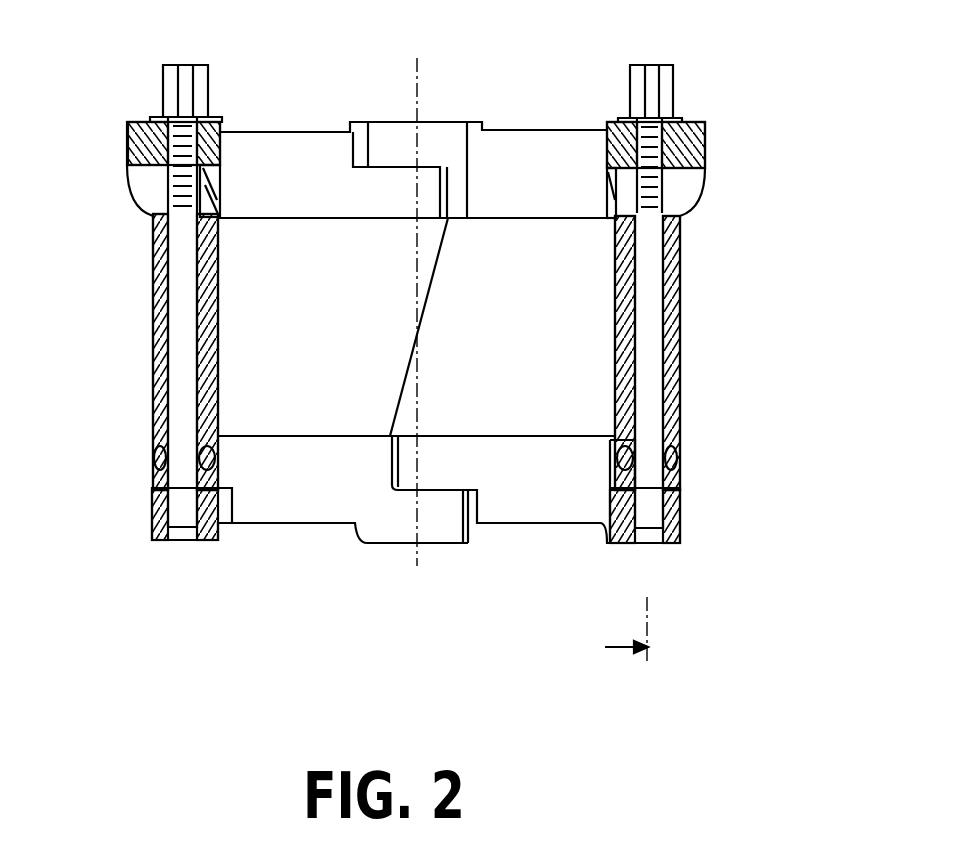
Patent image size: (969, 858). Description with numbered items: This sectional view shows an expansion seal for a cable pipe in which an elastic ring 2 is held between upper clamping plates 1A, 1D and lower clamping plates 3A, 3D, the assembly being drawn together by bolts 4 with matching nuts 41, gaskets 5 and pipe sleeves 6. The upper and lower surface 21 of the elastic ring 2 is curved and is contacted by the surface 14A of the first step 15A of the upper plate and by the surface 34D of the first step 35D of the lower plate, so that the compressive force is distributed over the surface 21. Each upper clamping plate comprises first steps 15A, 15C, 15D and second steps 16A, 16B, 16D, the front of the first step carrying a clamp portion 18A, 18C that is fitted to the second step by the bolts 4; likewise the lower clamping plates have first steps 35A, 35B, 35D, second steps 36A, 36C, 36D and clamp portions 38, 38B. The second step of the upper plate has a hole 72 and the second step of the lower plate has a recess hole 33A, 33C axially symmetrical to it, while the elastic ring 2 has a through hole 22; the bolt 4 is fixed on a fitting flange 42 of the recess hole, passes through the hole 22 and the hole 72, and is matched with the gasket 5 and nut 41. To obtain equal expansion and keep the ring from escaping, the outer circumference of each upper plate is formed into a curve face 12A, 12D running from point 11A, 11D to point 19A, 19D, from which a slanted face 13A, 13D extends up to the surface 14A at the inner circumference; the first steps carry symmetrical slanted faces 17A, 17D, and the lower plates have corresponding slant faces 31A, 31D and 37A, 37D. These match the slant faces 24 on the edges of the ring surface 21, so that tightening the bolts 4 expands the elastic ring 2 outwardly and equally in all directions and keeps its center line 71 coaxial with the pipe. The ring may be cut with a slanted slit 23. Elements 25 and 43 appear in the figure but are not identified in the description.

The upper clamping plate 1A is at (492, 148).
The upper clamping plate 1D is at (333, 132).
The elastic ring 2 is at (672, 320).
The lower clamping plate 3A is at (510, 524).
The lower clamping plate 3D is at (323, 523).
The bolt 4 is at (172, 282).
The gasket 5 is at (150, 117).
The pipe sleeve 6 is at (620, 630).
The point 11A is at (705, 150).
The point 11D is at (127, 150).
The curve face 12A is at (700, 172).
The curve face 12D is at (136, 172).
The slanted face 13A is at (682, 204).
The slanted face 13D is at (150, 196).
The surface 14A is at (667, 186).
The first step 15A is at (612, 145).
The first step 15C is at (228, 200).
The first step 15D is at (383, 218).
The second step 16A is at (448, 132).
The second step 16B is at (705, 126).
The second step 16D is at (127, 126).
The slanted face 17A is at (598, 218).
The slanted face 17D is at (222, 212).
The clamp portion 18A is at (610, 180).
The clamp portion 18C is at (215, 175).
The point 19A is at (684, 218).
The point 19D is at (157, 214).
The upper and lower surface 21 is at (216, 252).
The through hole 22 is at (160, 302).
The slit 23 is at (426, 305).
The slant face 24 is at (160, 238).
The tube wall 25 is at (157, 357).
The slant face 31A is at (680, 442).
The slant face 31D is at (150, 442).
The recess hole 33A is at (665, 546).
The recess hole 33C is at (160, 542).
The surface 34D is at (226, 470).
The first step 35A is at (447, 466).
The first step 35B is at (610, 462).
The first step 35D is at (150, 472).
The second step 36A is at (636, 546).
The second step 36C is at (210, 542).
The second step 36D is at (440, 545).
The slant face 37A is at (612, 438).
The slant face 37D is at (220, 440).
The clamp portion 38 is at (214, 492).
The clamp portion 38B is at (612, 494).
The nut 41 is at (188, 66).
The fitting flange 42 is at (182, 541).
The nut 43 is at (222, 142).
The center line 71 is at (417, 566).
The hole 72 is at (212, 122).